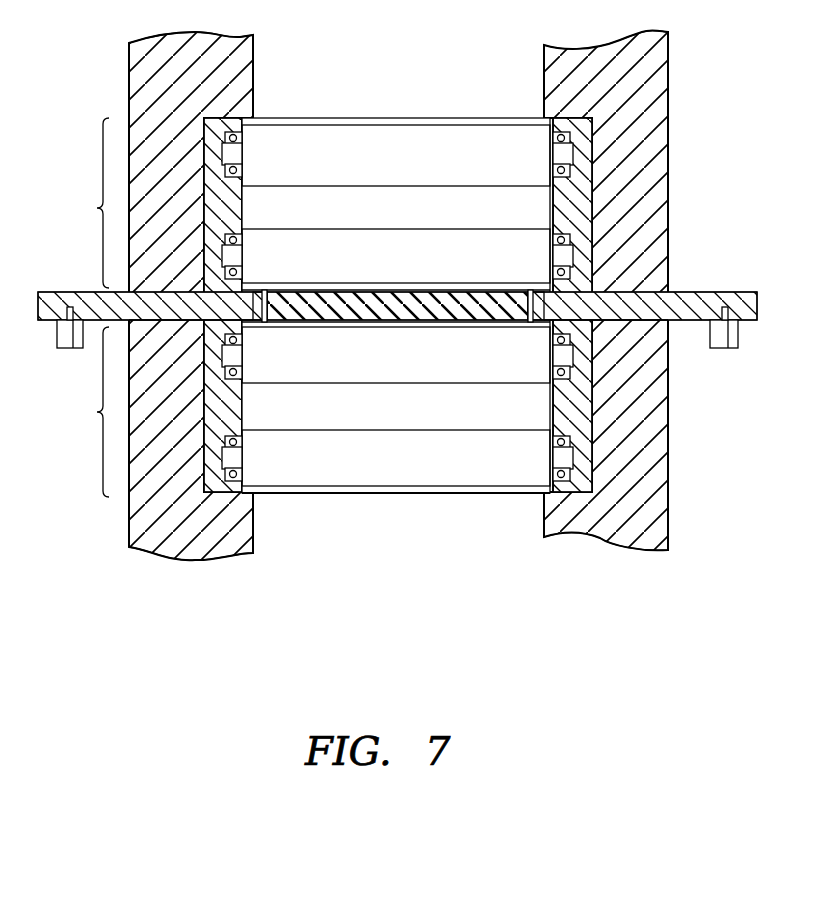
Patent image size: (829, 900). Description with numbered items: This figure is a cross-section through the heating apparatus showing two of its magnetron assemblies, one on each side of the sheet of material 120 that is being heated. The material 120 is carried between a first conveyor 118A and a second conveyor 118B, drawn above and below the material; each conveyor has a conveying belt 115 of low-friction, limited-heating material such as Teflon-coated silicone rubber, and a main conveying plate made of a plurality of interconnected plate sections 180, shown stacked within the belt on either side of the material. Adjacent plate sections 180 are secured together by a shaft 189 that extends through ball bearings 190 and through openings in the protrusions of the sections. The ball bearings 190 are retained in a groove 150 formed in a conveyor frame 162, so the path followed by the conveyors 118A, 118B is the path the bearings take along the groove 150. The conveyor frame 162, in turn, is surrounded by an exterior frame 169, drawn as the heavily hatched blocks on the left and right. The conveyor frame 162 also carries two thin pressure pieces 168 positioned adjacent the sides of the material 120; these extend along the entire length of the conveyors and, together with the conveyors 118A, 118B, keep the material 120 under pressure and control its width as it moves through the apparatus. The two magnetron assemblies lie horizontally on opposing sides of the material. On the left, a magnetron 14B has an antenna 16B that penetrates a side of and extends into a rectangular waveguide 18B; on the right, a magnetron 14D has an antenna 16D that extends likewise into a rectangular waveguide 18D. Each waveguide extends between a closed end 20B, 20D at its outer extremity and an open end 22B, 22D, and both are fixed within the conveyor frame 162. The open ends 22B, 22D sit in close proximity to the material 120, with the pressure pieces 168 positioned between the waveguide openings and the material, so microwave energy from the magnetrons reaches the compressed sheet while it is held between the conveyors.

The exterior frame 169 is at (157, 75).
The conveyor frame 162 is at (583, 203).
The groove 150 is at (572, 165).
The conveying belt 115 is at (441, 118).
The plate section 180 is at (392, 168).
The shaft 189 is at (233, 155).
The ball bearings 190 is at (575, 135).
The closed end 20B is at (47, 294).
The closed end 20D is at (766, 280).
The material 120 is at (500, 300).
The open end 22B is at (266, 300).
The open end 22D is at (533, 300).
The pressure pieces 168 is at (268, 292).
The magnetron 14B is at (58, 334).
The antenna 16B is at (74, 313).
The magnetron 14D is at (736, 334).
The antenna 16D is at (725, 315).
The rectangular waveguide 18B is at (172, 321).
The rectangular waveguide 18D is at (636, 321).
The first conveyor 118A is at (82, 203).
The second conveyor 118B is at (82, 412).